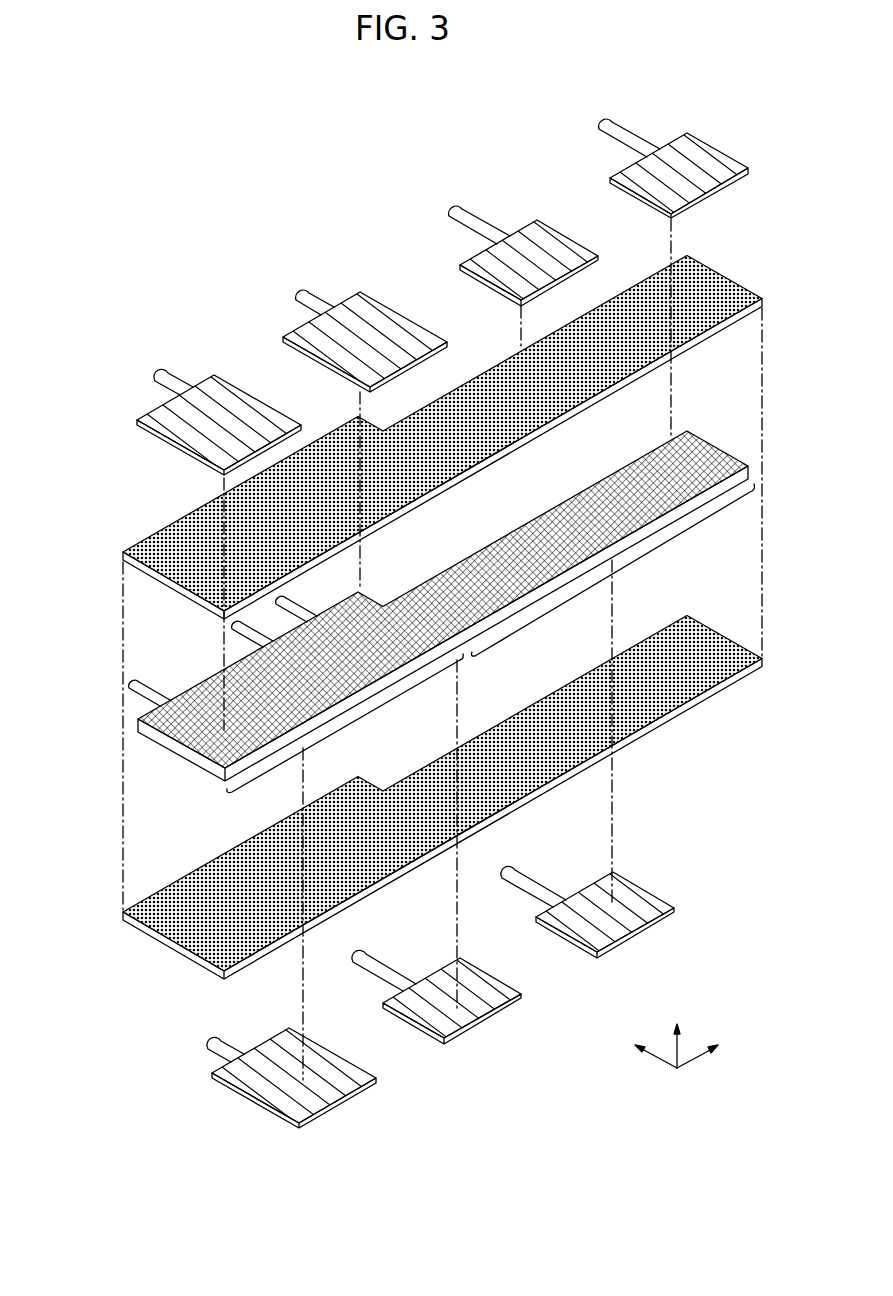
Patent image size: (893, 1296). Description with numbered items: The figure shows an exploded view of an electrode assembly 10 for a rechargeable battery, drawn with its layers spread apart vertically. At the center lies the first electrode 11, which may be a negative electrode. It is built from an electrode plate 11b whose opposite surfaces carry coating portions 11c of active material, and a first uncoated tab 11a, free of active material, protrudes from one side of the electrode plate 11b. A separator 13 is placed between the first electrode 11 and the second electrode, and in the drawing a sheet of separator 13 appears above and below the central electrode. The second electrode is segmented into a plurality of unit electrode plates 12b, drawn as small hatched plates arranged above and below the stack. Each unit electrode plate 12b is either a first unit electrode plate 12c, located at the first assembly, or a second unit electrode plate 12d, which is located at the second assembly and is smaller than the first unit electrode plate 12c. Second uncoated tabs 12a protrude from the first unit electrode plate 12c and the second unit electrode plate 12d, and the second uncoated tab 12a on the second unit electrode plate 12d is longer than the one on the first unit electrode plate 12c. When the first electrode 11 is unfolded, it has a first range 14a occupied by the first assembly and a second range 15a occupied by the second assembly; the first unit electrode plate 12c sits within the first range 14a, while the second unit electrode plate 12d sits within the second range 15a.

The electrode assembly 10 is at (221, 144).
The first electrode 11 is at (389, 631).
The first uncoated tab 11a is at (133, 688).
The electrode plate 11b is at (192, 760).
The coating portions 11c is at (145, 722).
The second uncoated tabs 12a is at (302, 291).
The unit electrode plates 12b is at (512, 647).
The first unit electrode plate 12c is at (355, 300).
The second unit electrode plate 12d is at (490, 255).
The separator 13 is at (160, 538).
The first range 14a is at (388, 714).
The second range 15a is at (613, 568).